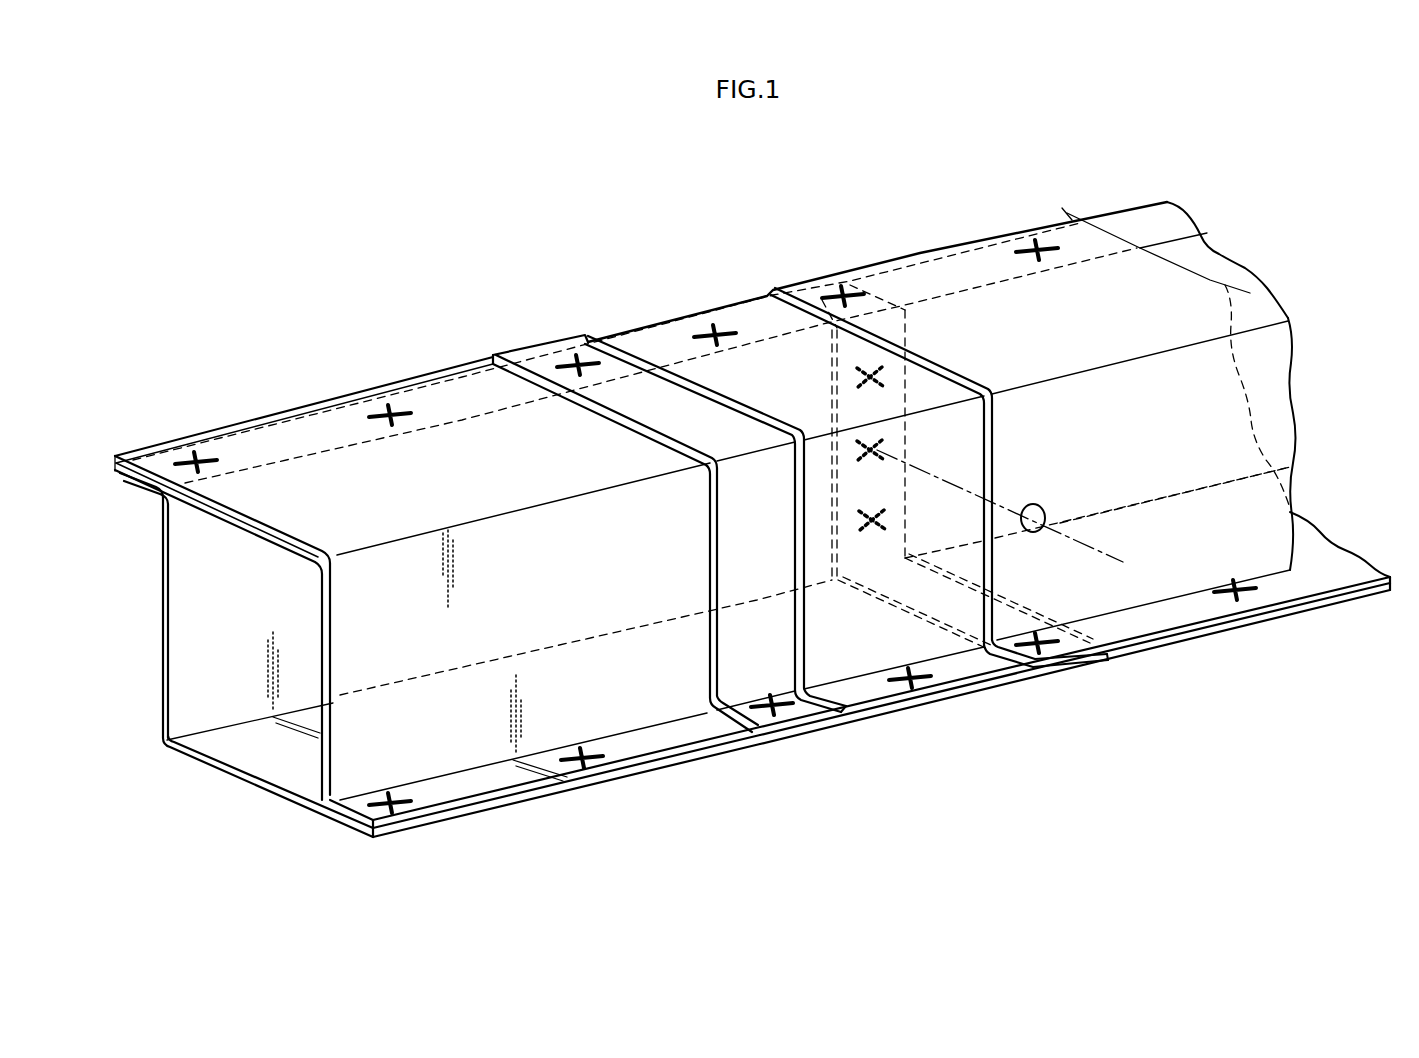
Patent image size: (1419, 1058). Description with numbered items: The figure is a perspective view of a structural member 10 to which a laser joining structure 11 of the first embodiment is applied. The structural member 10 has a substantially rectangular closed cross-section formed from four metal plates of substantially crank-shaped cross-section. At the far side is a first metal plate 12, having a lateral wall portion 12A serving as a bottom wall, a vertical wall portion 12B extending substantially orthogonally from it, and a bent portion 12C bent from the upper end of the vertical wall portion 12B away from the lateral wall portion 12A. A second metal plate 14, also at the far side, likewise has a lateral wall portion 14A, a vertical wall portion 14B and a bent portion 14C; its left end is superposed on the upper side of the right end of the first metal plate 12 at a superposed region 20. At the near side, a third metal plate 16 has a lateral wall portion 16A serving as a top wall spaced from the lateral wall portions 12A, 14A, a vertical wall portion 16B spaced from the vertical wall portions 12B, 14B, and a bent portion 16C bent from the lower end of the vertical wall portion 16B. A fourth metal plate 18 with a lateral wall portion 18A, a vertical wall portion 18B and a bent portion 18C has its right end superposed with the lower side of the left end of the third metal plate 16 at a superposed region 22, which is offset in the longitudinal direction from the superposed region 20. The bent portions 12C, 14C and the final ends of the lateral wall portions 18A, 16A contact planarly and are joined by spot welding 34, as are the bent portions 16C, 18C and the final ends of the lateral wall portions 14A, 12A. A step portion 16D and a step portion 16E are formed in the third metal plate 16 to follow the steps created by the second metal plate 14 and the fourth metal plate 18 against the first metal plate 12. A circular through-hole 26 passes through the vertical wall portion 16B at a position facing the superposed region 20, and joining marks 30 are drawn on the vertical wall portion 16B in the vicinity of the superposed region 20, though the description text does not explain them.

The structural member 10 is at (664, 213).
The laser joining structure 11 is at (889, 246).
The first metal plate 12 is at (222, 686).
The lateral wall portion 12A is at (296, 778).
The vertical wall portion 12B is at (192, 657).
The bent portion 12C is at (120, 478).
The second metal plate 14 is at (963, 566).
The lateral wall portion 14A is at (1160, 640).
The vertical wall portion 14B is at (845, 373).
The bent portion 14C is at (970, 243).
The third metal plate 16 is at (1210, 558).
The lateral wall portion 16A is at (1180, 298).
The vertical wall portion 16B is at (1235, 400).
The bent portion 16C is at (1275, 590).
The step portion 16D is at (1003, 665).
The step portion 16E is at (838, 697).
The fourth metal plate 18 is at (630, 690).
The lateral wall portion 18A is at (360, 478).
The vertical wall portion 18B is at (425, 737).
The bent portion 18C is at (512, 776).
The superposed region 20 is at (885, 408).
The superposed region 22 is at (750, 670).
The through-hole 26 is at (1046, 511).
The spot weld 30 is at (878, 366).
The spot welding 34 is at (570, 360).